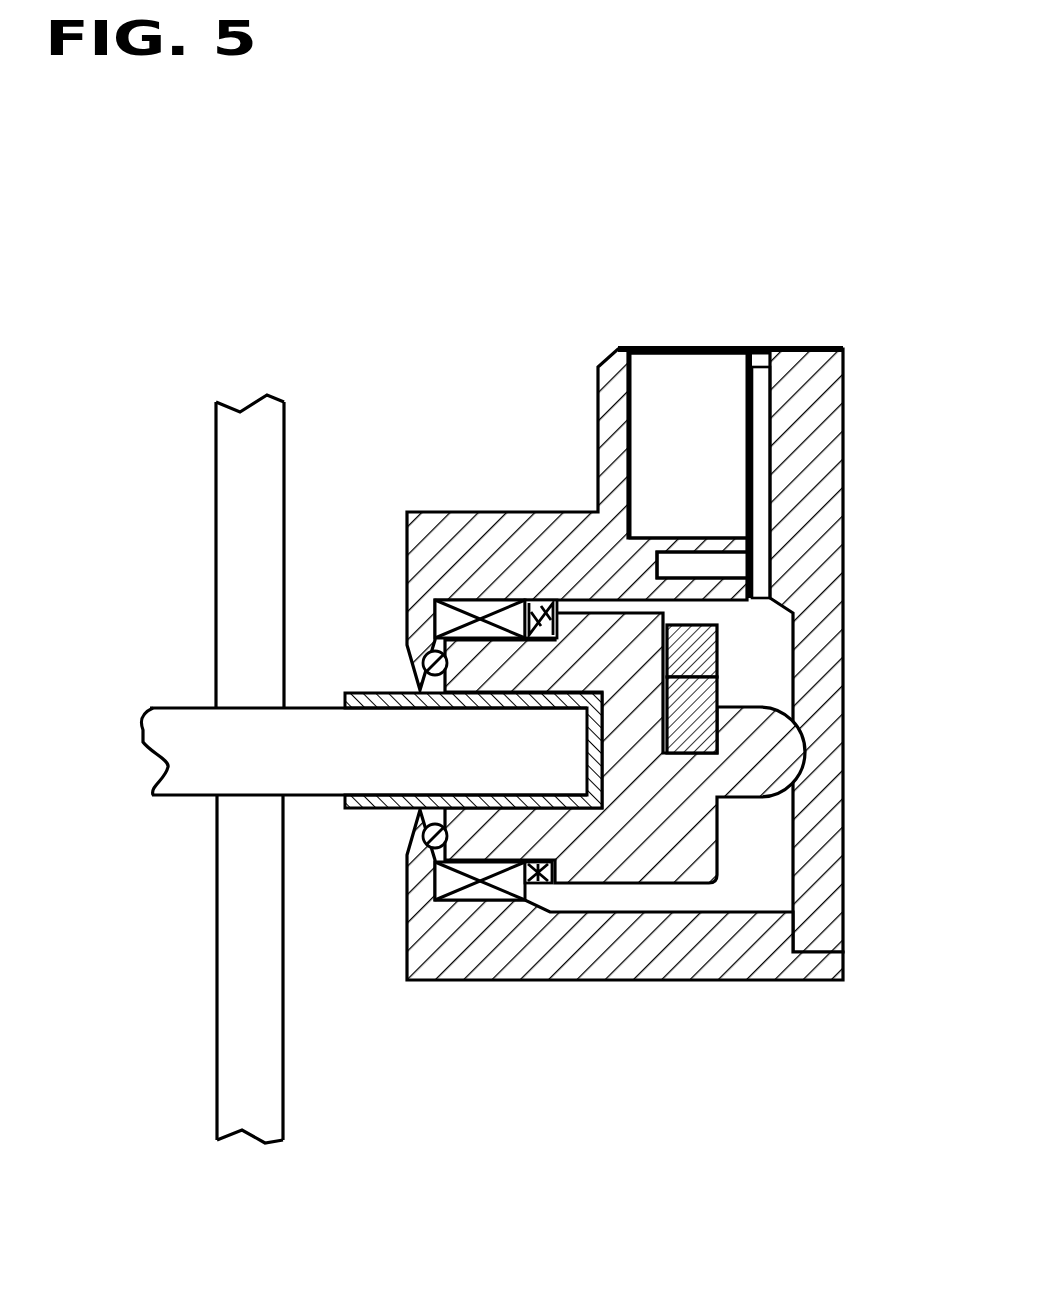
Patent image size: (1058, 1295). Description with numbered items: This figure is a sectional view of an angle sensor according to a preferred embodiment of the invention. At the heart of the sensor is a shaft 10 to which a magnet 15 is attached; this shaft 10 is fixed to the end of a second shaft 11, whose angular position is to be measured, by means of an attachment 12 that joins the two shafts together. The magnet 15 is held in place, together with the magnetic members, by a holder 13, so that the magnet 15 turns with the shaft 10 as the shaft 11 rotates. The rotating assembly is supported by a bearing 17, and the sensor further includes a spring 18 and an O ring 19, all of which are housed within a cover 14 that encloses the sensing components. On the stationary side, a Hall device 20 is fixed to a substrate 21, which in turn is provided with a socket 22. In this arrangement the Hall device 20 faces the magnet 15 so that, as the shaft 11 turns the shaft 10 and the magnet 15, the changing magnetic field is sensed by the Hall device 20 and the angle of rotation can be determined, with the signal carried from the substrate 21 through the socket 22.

The shaft 10 is at (643, 870).
The shaft 11 is at (183, 797).
The attachment 12 is at (377, 810).
The holder 13 is at (727, 647).
The cover 14 is at (845, 838).
The magnet 15 is at (705, 692).
The bearing 17 is at (470, 607).
The spring 18 is at (550, 612).
The O ring 19 is at (428, 650).
The Hall device 20 is at (735, 563).
The substrate 21 is at (760, 457).
The socket 22 is at (693, 365).